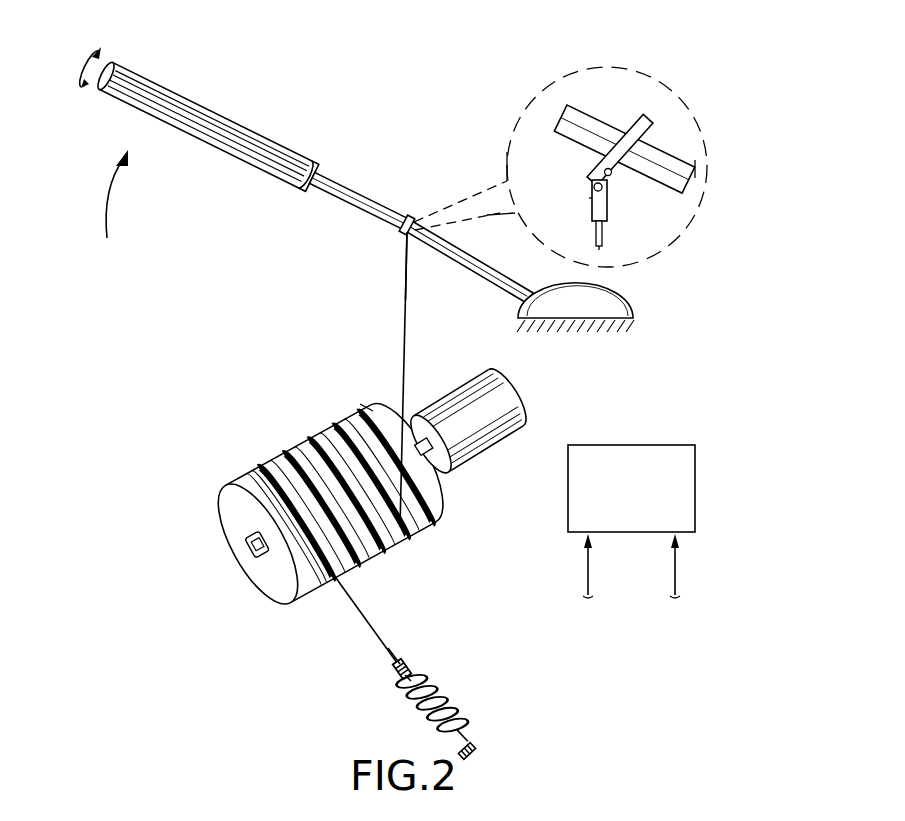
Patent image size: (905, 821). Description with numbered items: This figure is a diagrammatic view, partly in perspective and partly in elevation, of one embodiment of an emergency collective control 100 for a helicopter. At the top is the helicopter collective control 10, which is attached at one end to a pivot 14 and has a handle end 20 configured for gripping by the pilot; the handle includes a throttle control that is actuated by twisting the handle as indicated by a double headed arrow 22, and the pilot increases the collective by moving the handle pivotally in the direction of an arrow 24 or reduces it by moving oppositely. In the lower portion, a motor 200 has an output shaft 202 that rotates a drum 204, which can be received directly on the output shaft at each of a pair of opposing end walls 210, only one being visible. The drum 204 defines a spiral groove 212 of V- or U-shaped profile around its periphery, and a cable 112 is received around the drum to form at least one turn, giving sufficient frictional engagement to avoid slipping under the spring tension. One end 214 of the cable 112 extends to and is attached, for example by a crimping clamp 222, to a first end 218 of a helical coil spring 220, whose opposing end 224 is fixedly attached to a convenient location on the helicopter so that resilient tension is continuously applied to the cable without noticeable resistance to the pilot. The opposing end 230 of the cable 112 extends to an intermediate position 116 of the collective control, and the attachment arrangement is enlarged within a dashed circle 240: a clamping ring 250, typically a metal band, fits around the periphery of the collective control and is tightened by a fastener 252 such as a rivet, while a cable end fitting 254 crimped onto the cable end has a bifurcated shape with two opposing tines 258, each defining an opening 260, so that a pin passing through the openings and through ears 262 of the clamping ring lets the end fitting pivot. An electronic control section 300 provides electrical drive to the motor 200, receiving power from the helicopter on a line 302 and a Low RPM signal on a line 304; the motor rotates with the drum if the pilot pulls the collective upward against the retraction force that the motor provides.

The collective control 10 is at (368, 158).
The pivot 14 is at (633, 305).
The handle end 20 is at (232, 122).
The double headed arrow 22 is at (106, 46).
The arrow 24 is at (108, 204).
The emergency collective control 100 is at (186, 372).
The cable 112 is at (406, 338).
The intermediate position 116 is at (412, 218).
The motor 200 is at (513, 393).
The output shaft 202 is at (432, 466).
The drum 204 is at (358, 410).
The end wall 210 is at (300, 484).
The spiral groove 212 is at (351, 416).
The cable end 214 is at (401, 657).
The first end of spring 218 is at (411, 677).
The spring 220 is at (444, 703).
The crimping clamp 222 is at (395, 673).
The opposing end of spring 224 is at (468, 740).
The opposing end of cable 230 is at (403, 268).
The dashed circle 240 is at (520, 100).
The clamping ring 250 is at (621, 122).
The fastener 252 is at (639, 140).
The cable end fitting 254 is at (585, 207).
The tines 258 is at (608, 200).
The opening 260 is at (590, 188).
The ears 262 is at (690, 170).
The electronic control section 300 is at (651, 500).
The line 302 is at (677, 577).
The line 304 is at (590, 573).